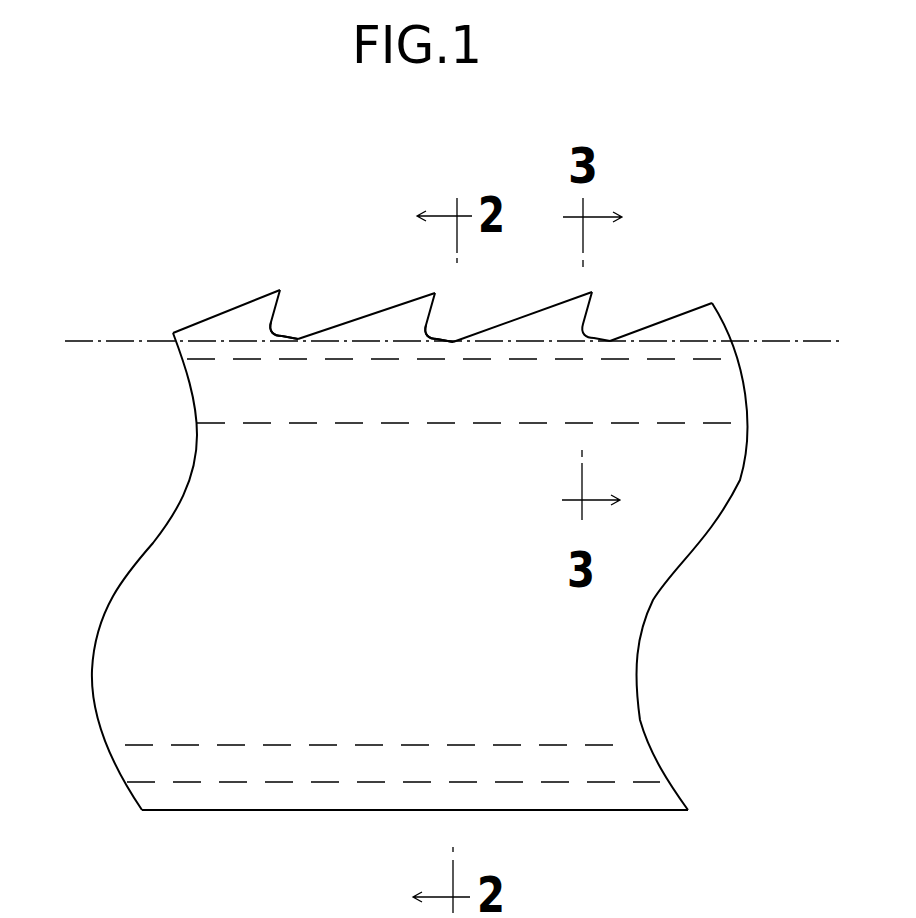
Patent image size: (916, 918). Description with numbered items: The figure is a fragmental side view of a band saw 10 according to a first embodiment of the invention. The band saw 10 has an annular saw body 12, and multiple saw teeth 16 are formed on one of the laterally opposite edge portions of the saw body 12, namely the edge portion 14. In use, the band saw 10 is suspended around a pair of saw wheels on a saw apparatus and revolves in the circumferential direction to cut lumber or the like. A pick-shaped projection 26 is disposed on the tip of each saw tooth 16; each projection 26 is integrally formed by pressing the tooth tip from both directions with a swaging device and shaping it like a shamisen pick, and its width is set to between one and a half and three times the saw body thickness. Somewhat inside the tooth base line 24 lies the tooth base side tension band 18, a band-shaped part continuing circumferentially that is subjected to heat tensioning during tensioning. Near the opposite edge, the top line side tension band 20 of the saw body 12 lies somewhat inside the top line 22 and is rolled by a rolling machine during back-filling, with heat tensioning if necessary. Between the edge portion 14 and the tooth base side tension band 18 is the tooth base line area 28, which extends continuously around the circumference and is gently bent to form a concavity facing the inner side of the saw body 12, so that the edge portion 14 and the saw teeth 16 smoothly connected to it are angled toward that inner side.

The band saw 10 is at (185, 230).
The saw body 12 is at (348, 822).
The edge portion 14 is at (300, 322).
The saw teeth 16 is at (233, 320).
The tooth base side tension band 18 is at (605, 378).
The top line side tension band 20 is at (515, 760).
The top line 22 is at (233, 812).
The tooth base line 24 is at (783, 340).
The pick-shaped projection 26 is at (271, 327).
The tooth base line area 28 is at (453, 350).